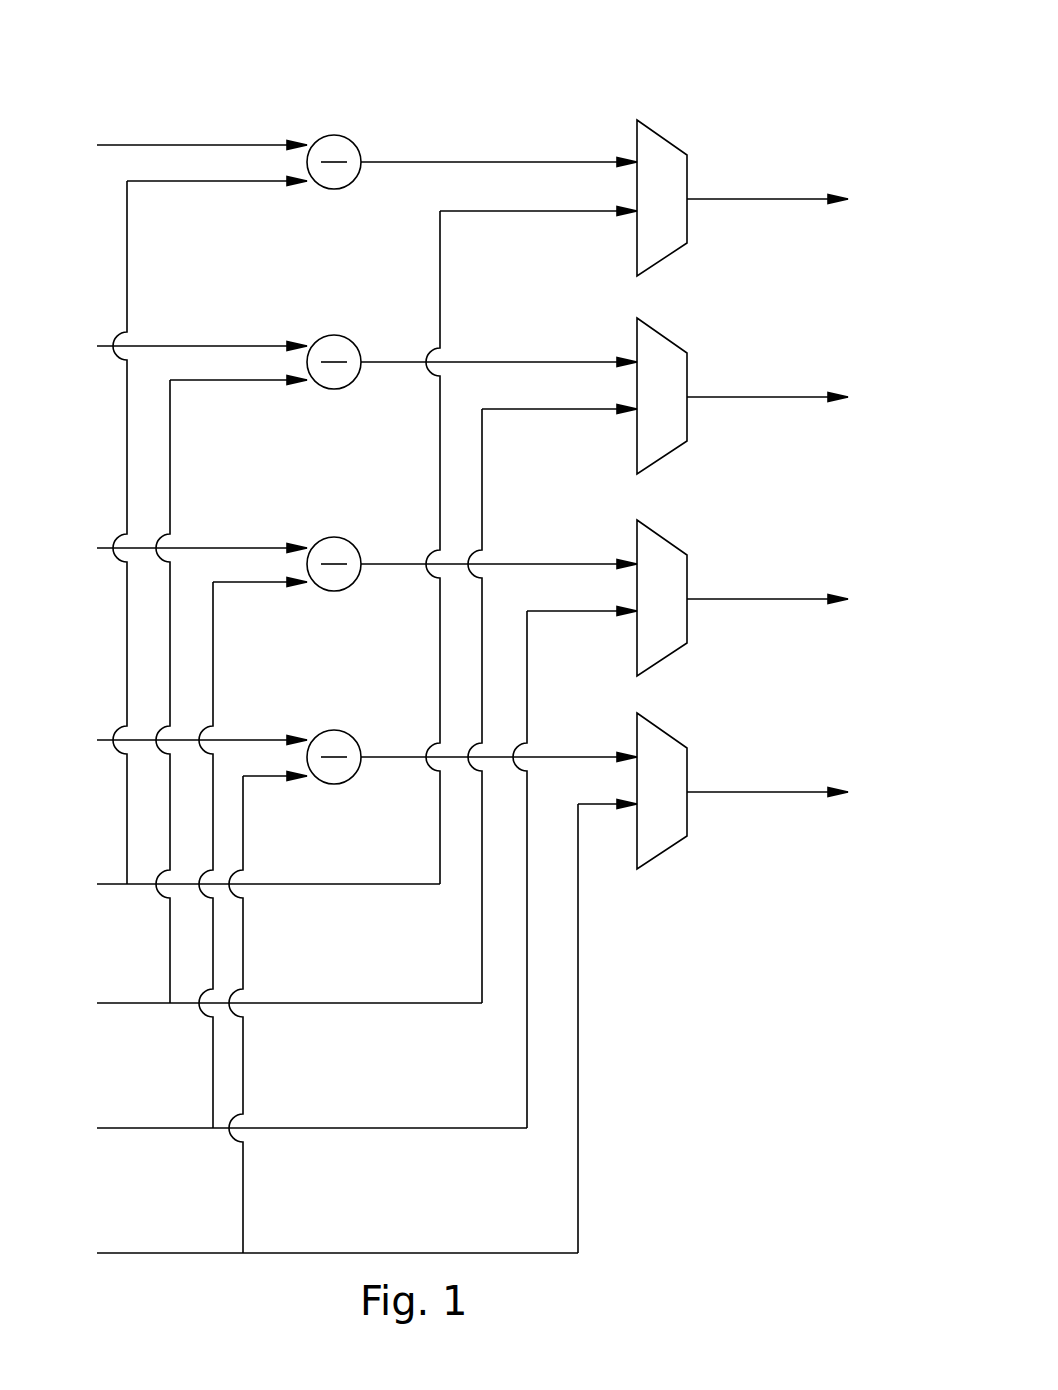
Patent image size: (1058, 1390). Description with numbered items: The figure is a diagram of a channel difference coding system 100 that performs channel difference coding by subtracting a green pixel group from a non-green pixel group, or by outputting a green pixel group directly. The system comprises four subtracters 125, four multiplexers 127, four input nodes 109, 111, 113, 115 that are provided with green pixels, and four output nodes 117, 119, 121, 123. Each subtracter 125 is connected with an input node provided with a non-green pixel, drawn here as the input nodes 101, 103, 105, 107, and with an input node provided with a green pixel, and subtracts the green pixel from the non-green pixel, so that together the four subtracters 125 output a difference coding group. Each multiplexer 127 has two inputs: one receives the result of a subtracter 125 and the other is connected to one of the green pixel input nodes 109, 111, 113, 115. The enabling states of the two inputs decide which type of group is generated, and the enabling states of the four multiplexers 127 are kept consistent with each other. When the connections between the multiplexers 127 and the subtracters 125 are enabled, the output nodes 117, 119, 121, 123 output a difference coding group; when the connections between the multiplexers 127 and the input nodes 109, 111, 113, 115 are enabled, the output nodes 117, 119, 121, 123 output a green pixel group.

The channel difference coding system 100 is at (565, 110).
The input node 101 is at (174, 146).
The input node 103 is at (174, 347).
The input node 105 is at (174, 549).
The input node 107 is at (174, 741).
The input node 109 is at (339, 539).
The input node 111 is at (339, 698).
The input node 113 is at (339, 862).
The input node 115 is at (339, 1021).
The output node 117 is at (791, 201).
The output node 119 is at (791, 399).
The output node 121 is at (791, 601).
The output node 123 is at (791, 794).
The subtracter 125 is at (353, 143).
The multiplexer 127 is at (687, 175).